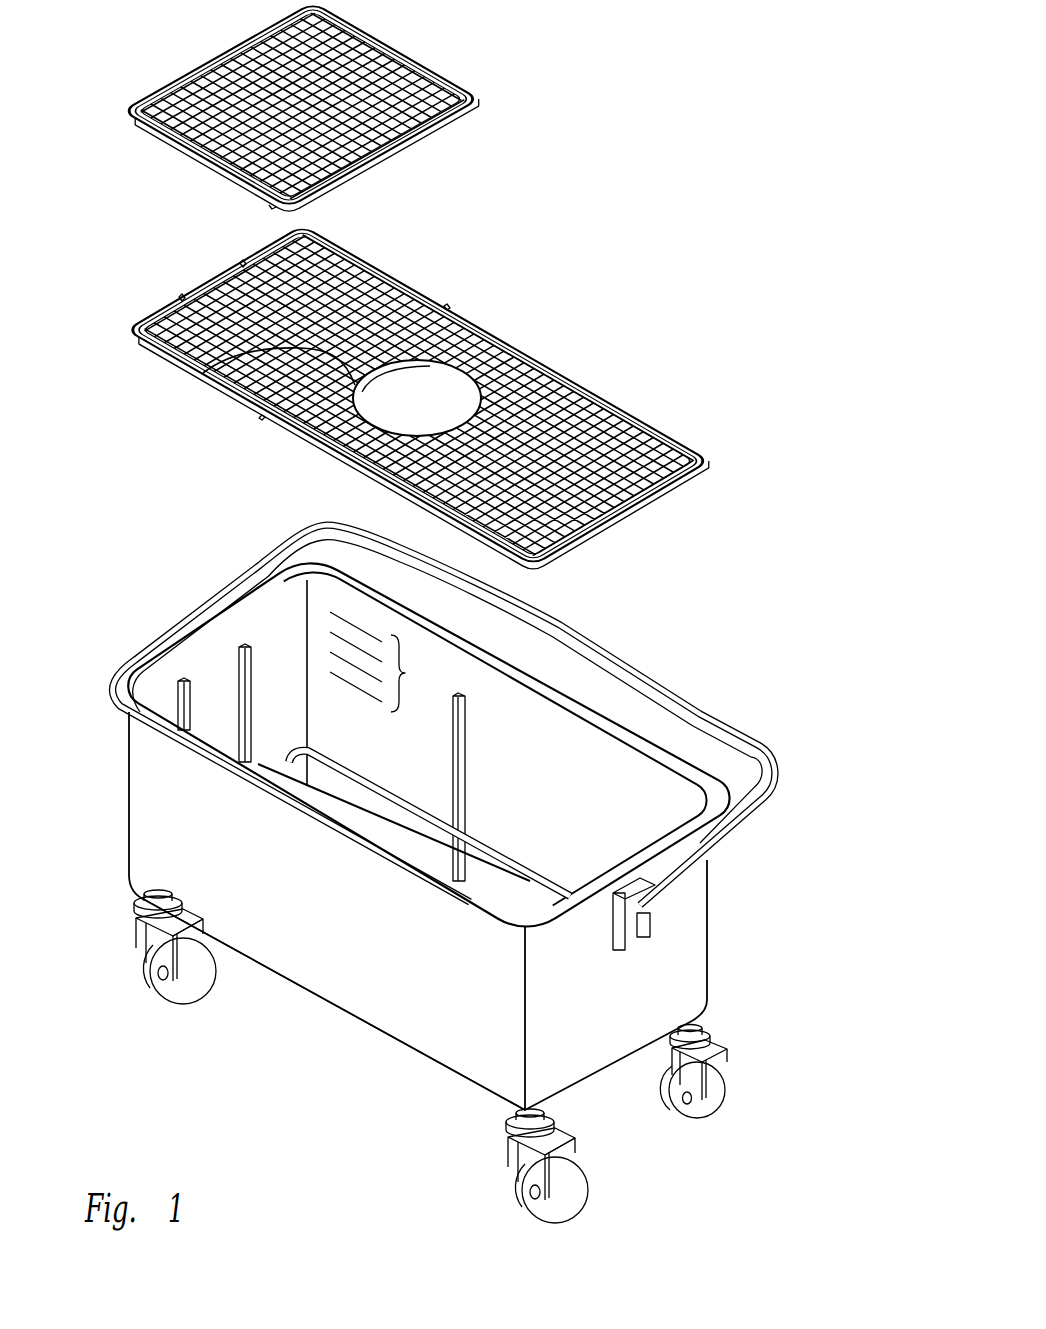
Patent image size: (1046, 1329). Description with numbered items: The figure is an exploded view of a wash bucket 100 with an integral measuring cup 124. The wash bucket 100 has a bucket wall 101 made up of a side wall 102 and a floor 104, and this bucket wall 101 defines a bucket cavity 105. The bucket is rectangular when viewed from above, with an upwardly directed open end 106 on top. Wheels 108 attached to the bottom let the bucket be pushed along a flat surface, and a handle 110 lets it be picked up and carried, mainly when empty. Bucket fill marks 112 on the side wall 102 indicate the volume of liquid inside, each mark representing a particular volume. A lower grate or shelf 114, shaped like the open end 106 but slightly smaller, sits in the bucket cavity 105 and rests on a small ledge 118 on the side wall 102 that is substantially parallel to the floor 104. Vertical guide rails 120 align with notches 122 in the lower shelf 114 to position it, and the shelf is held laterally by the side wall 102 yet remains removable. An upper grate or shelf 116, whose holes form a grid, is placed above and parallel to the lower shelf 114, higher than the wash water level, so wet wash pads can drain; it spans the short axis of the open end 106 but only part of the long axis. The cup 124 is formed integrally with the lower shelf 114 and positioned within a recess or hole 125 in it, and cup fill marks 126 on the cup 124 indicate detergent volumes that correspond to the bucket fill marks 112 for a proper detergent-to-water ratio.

The wash bucket 100 is at (695, 73).
The bucket wall 101 is at (145, 836).
The side wall 102 is at (372, 918).
The floor 104 is at (345, 1020).
The bucket cavity 105 is at (562, 777).
The open end 106 is at (203, 652).
The wheels 108 is at (160, 1005).
The handle 110 is at (762, 753).
The bucket fill marks 112 is at (384, 662).
The lower grate or shelf 114 is at (407, 381).
The upper grate or shelf 116 is at (430, 70).
The ledge 118 is at (510, 858).
The vertical guide rails 120 is at (184, 680).
The notches 122 is at (270, 208).
The measuring cup 124 is at (492, 361).
The recess or hole 125 is at (203, 373).
The cup fill marks 126 is at (447, 398).